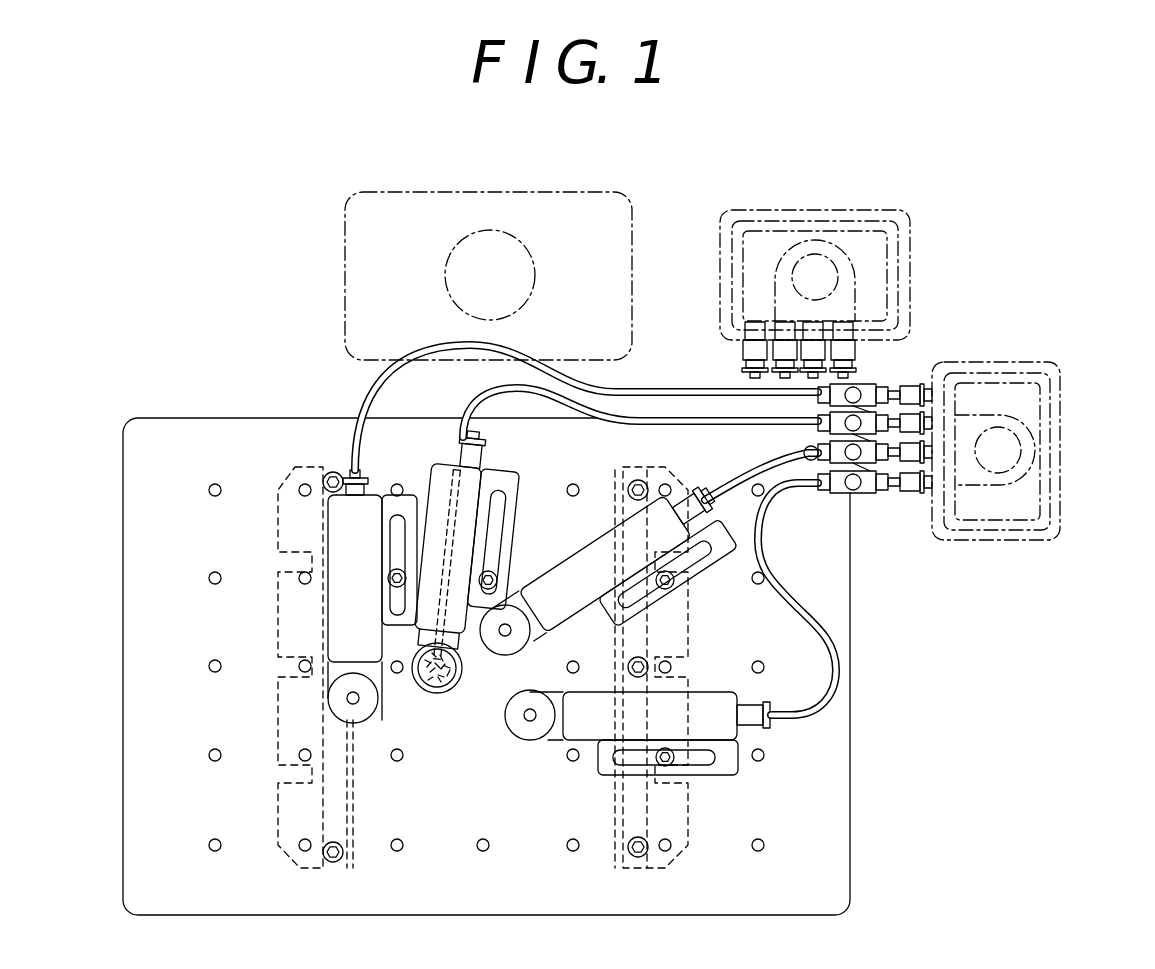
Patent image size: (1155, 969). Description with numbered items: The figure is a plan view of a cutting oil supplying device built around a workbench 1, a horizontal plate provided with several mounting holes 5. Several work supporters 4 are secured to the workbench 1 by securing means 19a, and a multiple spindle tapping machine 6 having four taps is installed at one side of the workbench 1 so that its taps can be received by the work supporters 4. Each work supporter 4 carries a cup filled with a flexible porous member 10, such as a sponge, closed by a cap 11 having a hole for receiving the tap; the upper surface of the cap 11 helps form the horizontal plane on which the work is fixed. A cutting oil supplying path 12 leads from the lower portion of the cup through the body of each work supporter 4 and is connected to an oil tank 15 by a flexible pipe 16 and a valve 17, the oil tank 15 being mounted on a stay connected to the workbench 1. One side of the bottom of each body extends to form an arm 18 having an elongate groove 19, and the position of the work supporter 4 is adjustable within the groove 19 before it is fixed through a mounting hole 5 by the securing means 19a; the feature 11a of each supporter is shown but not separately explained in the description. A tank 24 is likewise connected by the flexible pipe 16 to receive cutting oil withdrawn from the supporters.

The workbench 1 is at (833, 805).
The work supporter 4 is at (340, 622).
The mounting holes 5 is at (212, 660).
The multiple spindle tapping machine 6 is at (498, 250).
The flexible porous member 10 is at (437, 694).
The cap 11 is at (340, 712).
The pivot pin 11a is at (350, 699).
The cutting oil supplying path 12 is at (448, 534).
The oil tank 15 is at (1045, 425).
The flexible pipe 16 is at (768, 380).
The valve 17 is at (880, 402).
The arm 18 is at (407, 630).
The elongate groove 19 is at (397, 540).
The securing means 19a is at (392, 576).
The tank 24 is at (873, 232).